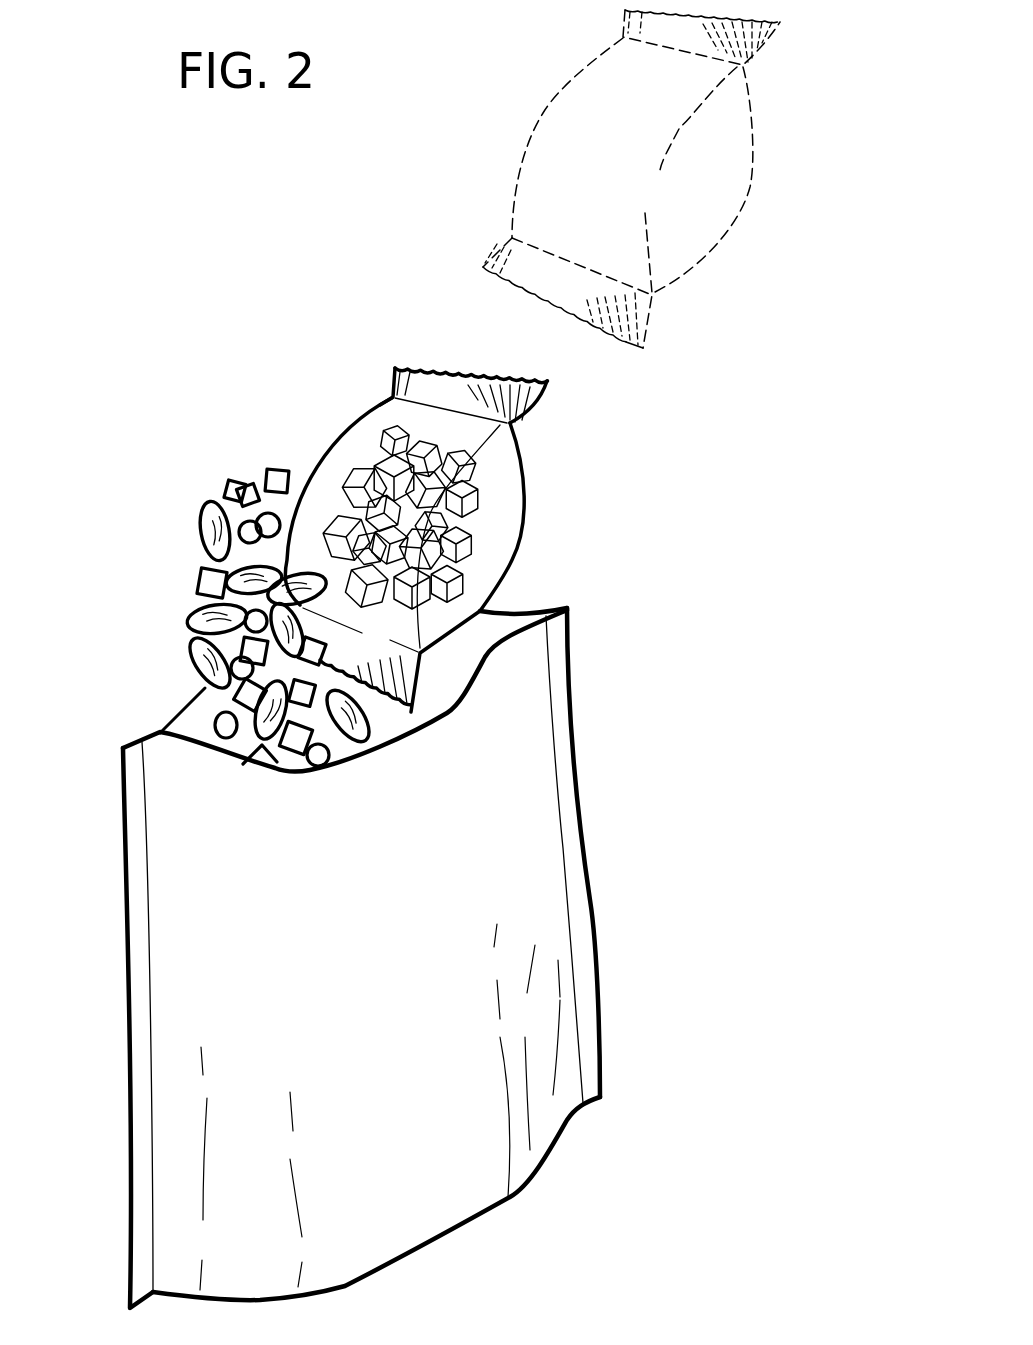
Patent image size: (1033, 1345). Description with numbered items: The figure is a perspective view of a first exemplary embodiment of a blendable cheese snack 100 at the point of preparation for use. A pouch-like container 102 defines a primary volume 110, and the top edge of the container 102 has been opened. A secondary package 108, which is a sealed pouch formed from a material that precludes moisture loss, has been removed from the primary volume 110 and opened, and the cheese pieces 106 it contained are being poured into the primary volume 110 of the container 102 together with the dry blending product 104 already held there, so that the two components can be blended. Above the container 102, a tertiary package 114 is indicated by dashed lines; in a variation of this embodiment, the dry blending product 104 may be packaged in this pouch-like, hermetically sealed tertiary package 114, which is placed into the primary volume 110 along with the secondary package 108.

The blendable cheese snack 100 is at (645, 508).
The container 102 is at (527, 870).
The dry blending product 104 is at (185, 593).
The cheese pieces 106 is at (468, 508).
The secondary package 108 is at (522, 470).
The primary volume 110 is at (176, 720).
The tertiary package 114 is at (752, 118).